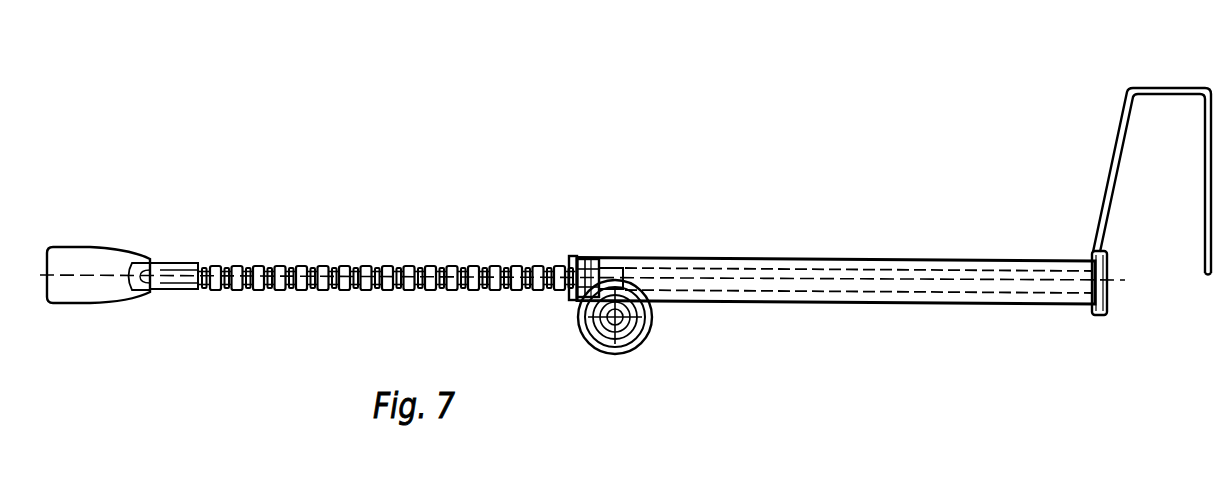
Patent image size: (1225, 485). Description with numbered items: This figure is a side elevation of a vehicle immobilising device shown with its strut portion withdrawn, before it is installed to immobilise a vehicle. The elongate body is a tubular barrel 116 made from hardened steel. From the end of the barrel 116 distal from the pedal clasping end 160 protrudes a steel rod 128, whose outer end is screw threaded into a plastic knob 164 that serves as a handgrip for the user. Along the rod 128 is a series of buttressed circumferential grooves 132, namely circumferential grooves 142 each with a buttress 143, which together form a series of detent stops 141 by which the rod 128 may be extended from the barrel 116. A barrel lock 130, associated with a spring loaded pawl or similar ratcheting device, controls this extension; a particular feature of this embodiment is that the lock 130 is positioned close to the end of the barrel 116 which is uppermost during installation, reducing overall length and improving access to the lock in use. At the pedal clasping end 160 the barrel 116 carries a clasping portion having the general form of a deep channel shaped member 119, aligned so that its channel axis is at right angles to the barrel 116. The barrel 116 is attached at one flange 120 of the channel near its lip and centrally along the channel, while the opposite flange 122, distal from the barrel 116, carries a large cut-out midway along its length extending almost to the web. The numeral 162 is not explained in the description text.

The tubular barrel 116 is at (820, 258).
The channel shaped member 119 is at (1198, 395).
The flange 120 is at (1108, 174).
The opposite flange 122 is at (1201, 250).
The rod 128 is at (485, 266).
The barrel lock 130 is at (640, 343).
The circumferential grooves 132 is at (385, 272).
The detent stops 141 is at (243, 292).
The circumferential grooves 142 is at (330, 292).
The buttress 143 is at (443, 292).
The pedal clasping end 160 is at (1155, 62).
The head assembly 162 is at (55, 182).
The plastic knob 164 is at (95, 247).